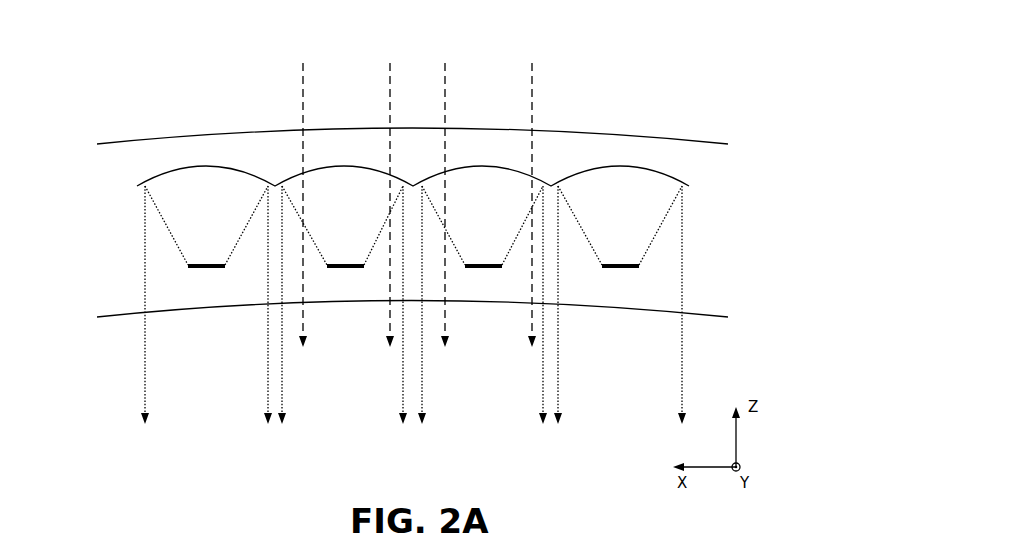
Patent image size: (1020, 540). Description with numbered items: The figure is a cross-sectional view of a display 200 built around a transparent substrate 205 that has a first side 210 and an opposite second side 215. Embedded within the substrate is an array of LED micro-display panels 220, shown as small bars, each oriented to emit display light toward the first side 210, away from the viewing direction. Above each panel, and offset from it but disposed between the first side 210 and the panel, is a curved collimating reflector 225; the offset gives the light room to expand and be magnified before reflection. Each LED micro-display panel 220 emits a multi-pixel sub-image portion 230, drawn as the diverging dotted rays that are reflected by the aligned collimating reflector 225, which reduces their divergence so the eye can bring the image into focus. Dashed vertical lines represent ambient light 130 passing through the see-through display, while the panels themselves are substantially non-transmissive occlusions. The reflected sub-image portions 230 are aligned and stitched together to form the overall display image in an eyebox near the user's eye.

The ambient light 130 is at (303, 97).
The display 200 is at (672, 79).
The transparent substrate 205 is at (118, 244).
The first side 210 is at (124, 142).
The second side 215 is at (124, 317).
The LED micro-display panel 220 is at (206, 268).
The collimating reflector 225 is at (213, 166).
The sub-image portion 230 is at (272, 428).